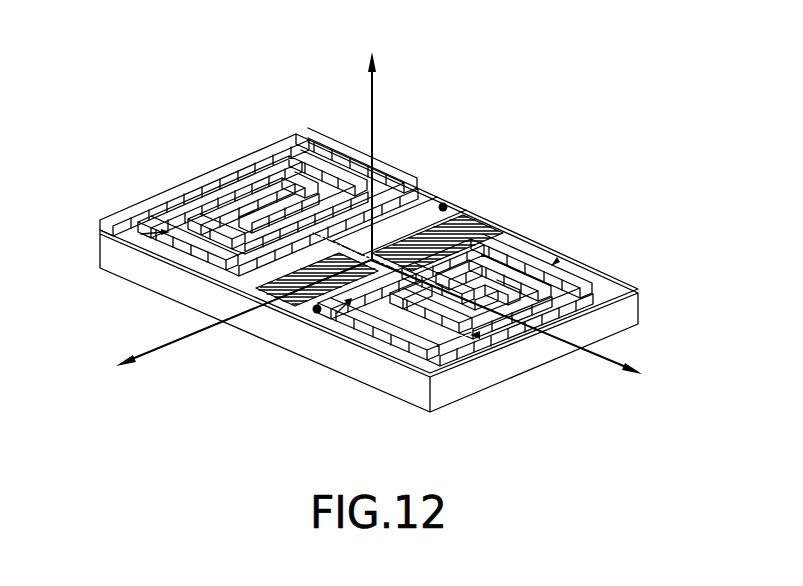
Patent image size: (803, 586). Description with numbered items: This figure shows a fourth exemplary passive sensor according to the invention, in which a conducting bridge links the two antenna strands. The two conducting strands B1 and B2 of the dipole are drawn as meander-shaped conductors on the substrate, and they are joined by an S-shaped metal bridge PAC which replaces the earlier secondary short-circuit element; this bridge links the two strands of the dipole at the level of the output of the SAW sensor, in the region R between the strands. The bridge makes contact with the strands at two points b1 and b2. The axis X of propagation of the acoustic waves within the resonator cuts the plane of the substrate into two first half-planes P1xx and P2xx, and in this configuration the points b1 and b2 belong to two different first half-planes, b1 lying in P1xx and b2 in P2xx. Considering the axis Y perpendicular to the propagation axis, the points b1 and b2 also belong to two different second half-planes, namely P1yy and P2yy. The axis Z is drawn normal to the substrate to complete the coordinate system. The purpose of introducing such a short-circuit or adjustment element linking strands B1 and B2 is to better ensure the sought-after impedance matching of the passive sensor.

The conducting strand B1 is at (248, 172).
The conducting strand B2 is at (585, 308).
The S-shaped metal bridge PAC is at (426, 200).
The coupling region (hatched) R is at (447, 222).
The linking point b1 is at (444, 202).
The linking point b2 is at (291, 300).
The second half-plane P1yy is at (141, 234).
The first half-plane P1xx is at (556, 262).
The first half-plane P2xx is at (476, 336).
The second half-plane P2yy is at (316, 314).
The propagation axis XX' X is at (516, 325).
The axis YY' Y is at (235, 320).
The Z axis Z is at (376, 139).